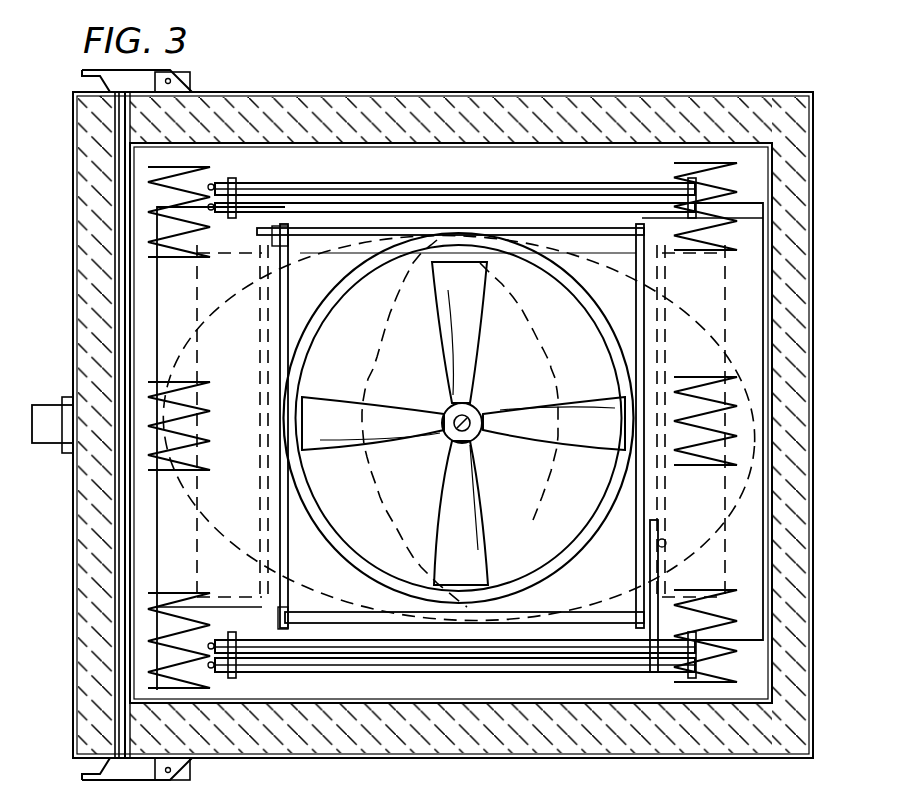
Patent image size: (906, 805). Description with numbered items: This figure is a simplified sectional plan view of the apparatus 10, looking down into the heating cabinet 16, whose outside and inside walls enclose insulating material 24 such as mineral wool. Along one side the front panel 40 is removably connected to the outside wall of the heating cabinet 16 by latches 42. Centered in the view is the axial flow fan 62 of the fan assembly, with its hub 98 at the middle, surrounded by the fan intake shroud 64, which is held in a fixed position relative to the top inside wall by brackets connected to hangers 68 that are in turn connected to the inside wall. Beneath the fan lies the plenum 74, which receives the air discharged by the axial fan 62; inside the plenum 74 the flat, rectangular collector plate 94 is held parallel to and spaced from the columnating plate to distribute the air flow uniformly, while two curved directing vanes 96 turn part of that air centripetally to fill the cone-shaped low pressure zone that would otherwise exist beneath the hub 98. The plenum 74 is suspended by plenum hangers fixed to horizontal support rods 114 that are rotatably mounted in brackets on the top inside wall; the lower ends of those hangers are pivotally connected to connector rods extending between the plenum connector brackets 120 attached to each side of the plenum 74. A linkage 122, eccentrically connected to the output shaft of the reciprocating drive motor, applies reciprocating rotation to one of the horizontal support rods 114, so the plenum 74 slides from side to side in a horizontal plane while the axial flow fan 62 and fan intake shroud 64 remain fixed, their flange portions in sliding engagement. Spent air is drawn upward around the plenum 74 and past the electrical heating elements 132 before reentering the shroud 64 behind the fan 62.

The apparatus 10 is at (637, 72).
The heating cabinet 16 is at (768, 90).
The insulating material 24 is at (488, 108).
The front panel 40 is at (75, 130).
The latches 42 is at (185, 78).
The plenum 74 is at (155, 293).
The electrical heating elements 132 is at (195, 166).
The hangers 68 is at (287, 224).
The horizontal support rods 114 is at (490, 672).
The plenum connector brackets 120 is at (272, 672).
The linkage 122 is at (650, 565).
The curved directing vanes 96 is at (256, 328).
The collector plate 94 is at (594, 500).
The fan intake shroud 64 is at (325, 528).
The axial flow fan 62 is at (440, 308).
The hub 98 is at (445, 413).